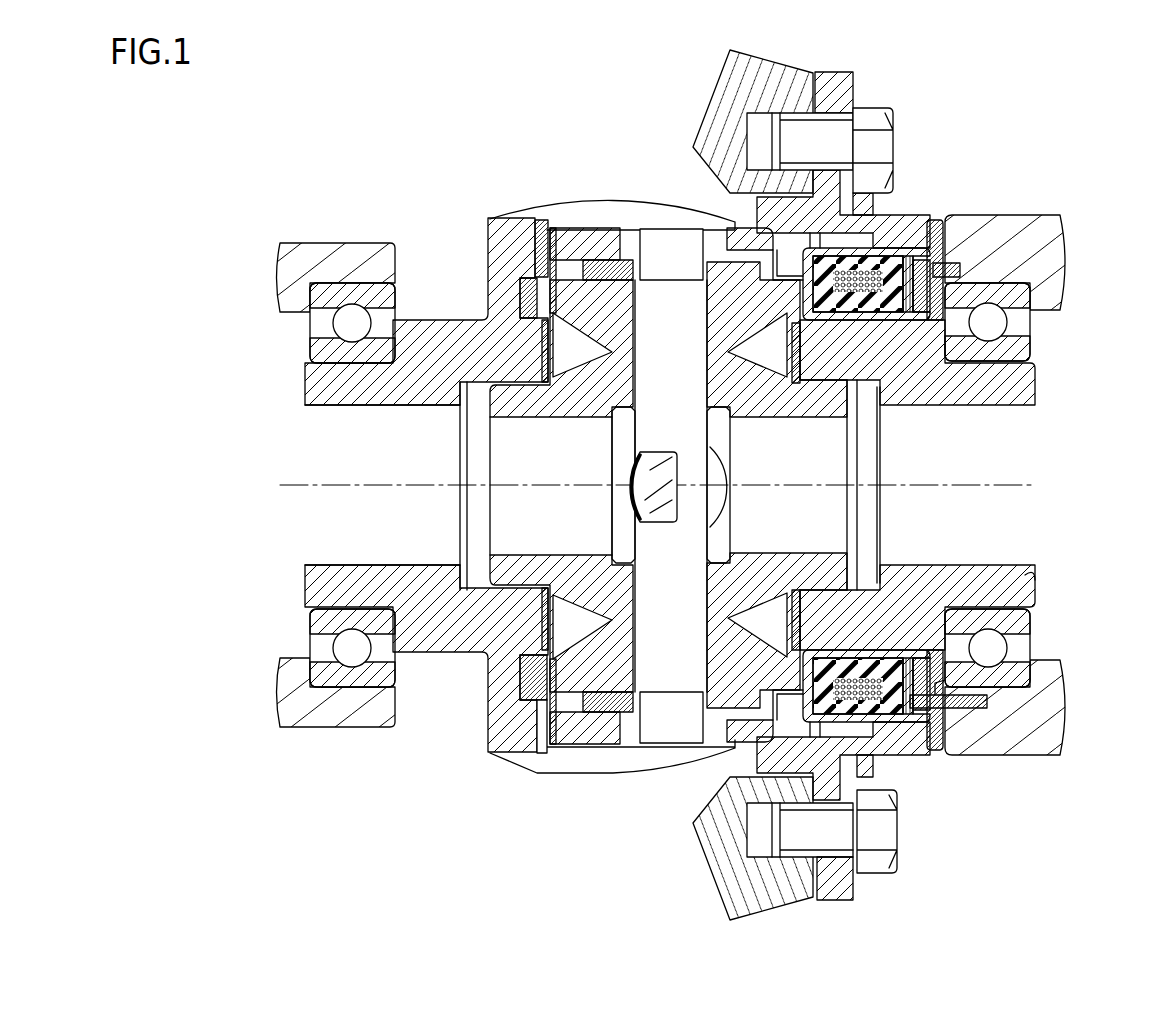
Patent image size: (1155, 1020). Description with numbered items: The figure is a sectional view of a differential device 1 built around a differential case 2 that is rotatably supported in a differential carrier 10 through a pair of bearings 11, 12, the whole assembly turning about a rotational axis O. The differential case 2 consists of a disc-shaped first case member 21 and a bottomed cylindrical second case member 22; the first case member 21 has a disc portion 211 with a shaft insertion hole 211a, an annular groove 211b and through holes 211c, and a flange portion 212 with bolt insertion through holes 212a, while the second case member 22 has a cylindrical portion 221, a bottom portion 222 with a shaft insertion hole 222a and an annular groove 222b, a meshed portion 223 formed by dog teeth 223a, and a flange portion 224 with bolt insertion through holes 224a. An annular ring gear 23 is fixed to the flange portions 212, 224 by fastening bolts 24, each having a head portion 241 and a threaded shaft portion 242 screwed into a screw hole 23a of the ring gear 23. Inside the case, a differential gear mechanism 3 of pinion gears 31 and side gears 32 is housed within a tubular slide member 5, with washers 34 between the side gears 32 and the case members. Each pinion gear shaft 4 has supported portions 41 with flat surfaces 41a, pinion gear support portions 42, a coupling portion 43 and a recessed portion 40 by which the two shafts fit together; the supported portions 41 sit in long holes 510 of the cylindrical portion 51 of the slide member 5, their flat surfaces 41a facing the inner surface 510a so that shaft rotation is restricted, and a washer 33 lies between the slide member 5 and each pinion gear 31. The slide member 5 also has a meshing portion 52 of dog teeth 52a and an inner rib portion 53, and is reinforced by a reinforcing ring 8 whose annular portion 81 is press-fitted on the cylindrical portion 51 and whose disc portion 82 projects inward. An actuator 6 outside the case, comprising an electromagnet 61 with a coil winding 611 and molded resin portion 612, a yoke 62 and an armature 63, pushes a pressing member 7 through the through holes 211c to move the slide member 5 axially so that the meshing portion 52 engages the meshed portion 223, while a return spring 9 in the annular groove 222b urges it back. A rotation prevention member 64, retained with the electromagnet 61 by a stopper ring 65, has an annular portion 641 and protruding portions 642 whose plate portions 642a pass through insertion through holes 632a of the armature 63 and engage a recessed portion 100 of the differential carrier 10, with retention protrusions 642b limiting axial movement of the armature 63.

The differential device 1 is at (381, 155).
The differential case 2 is at (292, 606).
The differential gear mechanism 3 is at (427, 453).
The pinion gear shaft 4 is at (633, 478).
The slide member 5 is at (575, 235).
The actuator 6 is at (948, 445).
The pressing member 7 is at (798, 380).
The reinforcing ring 8 is at (648, 120).
The return spring 9 is at (520, 300).
The differential carrier 10 is at (315, 242).
The bearing 11 is at (1032, 345).
The bearing 12 is at (310, 345).
The first case member 21 is at (1052, 438).
The second case member 22 is at (482, 767).
The ring gear 23 is at (736, 72).
The screw hole 23a is at (760, 95).
The fastening bolt 24 is at (892, 868).
The pinion gear 31 is at (600, 268).
The side gear 32 is at (500, 572).
The washer 33 is at (553, 250).
The washer 34 is at (478, 650).
The recessed portion 40 is at (620, 473).
The supported portion 41 is at (671, 486).
The flat surface 41a is at (662, 240).
The pinion gear support portion 42 is at (671, 486).
The coupling portion 43 is at (690, 470).
The cylindrical portion 51 is at (640, 700).
The meshing portion 52 is at (526, 238).
The dog teeth 52a is at (550, 255).
The inner rib portion 53 is at (560, 277).
The electromagnet 61 is at (915, 138).
The yoke 62 is at (820, 310).
The armature 63 is at (944, 240).
The rotation prevention member 64 is at (915, 733).
The stopper ring 65 is at (908, 312).
The annular portion 81 is at (740, 212).
The disc portion 82 is at (757, 230).
The recessed portion 100 is at (990, 722).
The disc portion 211 is at (895, 625).
The shaft insertion hole 211a is at (1037, 577).
The annular groove 211b is at (862, 790).
The through hole 211c is at (792, 790).
The flange portion 212 is at (866, 82).
The bolt insertion through hole 212a is at (880, 105).
The cylindrical portion 221 is at (628, 215).
The bottom portion 222 is at (490, 725).
The shaft insertion hole 222a is at (332, 560).
The annular groove 222b is at (522, 676).
The meshed portion 223 is at (542, 765).
The dog teeth 223a is at (538, 755).
The flange portion 224 is at (830, 85).
The bolt insertion through hole 224a is at (812, 108).
The head portion 241 is at (892, 120).
The shaft portion 242 is at (845, 137).
The long hole 510 is at (660, 742).
The inner surface 510a is at (738, 244).
The coil winding 611 is at (882, 226).
The molded resin portion 612 is at (916, 232).
The insertion through hole 632a is at (938, 720).
The annular portion 641 is at (866, 312).
The protruding portion 642 is at (945, 272).
The plate portion 642a is at (975, 712).
The retention protrusion 642b is at (1148, 665).
The rotational axis O is at (292, 487).